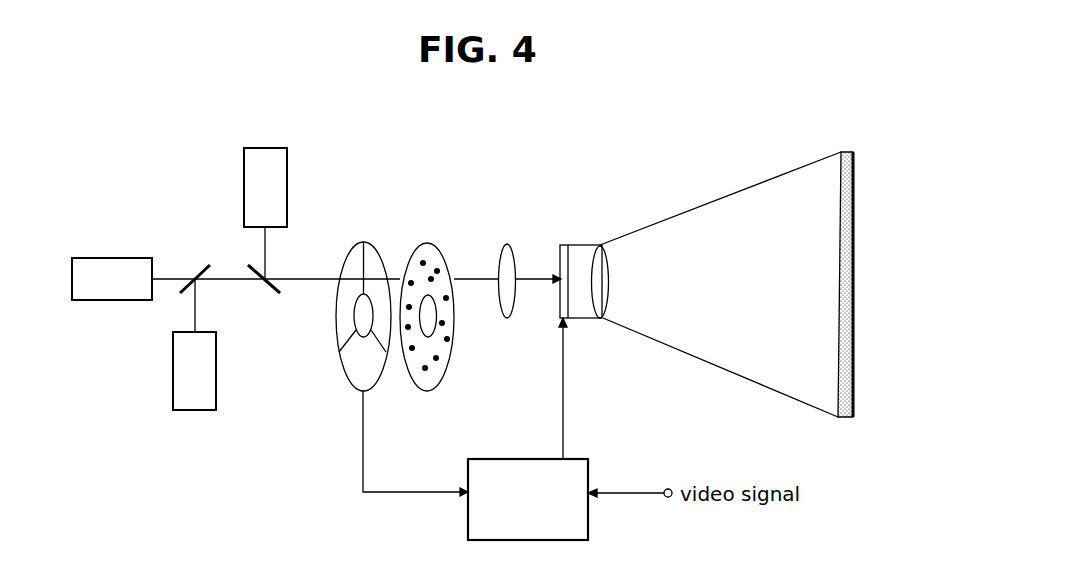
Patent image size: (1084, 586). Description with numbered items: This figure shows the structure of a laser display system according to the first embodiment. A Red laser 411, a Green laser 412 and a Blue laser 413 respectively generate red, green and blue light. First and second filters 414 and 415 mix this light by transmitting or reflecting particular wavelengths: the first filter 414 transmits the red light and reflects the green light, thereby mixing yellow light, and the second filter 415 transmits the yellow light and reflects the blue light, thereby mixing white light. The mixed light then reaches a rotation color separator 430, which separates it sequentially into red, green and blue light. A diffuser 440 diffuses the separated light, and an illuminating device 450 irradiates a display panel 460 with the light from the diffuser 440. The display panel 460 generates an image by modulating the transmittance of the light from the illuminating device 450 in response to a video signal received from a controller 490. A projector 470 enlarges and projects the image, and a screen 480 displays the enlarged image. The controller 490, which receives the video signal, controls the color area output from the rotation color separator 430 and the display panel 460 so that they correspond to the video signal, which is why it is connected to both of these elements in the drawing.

The Red laser 411 is at (86, 263).
The Green laser 412 is at (216, 400).
The Blue laser 413 is at (287, 166).
The first filter 414 is at (198, 268).
The second filter 415 is at (271, 292).
The rotation color separator 430 is at (373, 253).
The diffuser 440 is at (434, 254).
The illuminating device 450 is at (508, 247).
The display panel 460 is at (564, 250).
The projector 470 is at (600, 306).
The screen 480 is at (853, 185).
The controller 490 is at (498, 460).